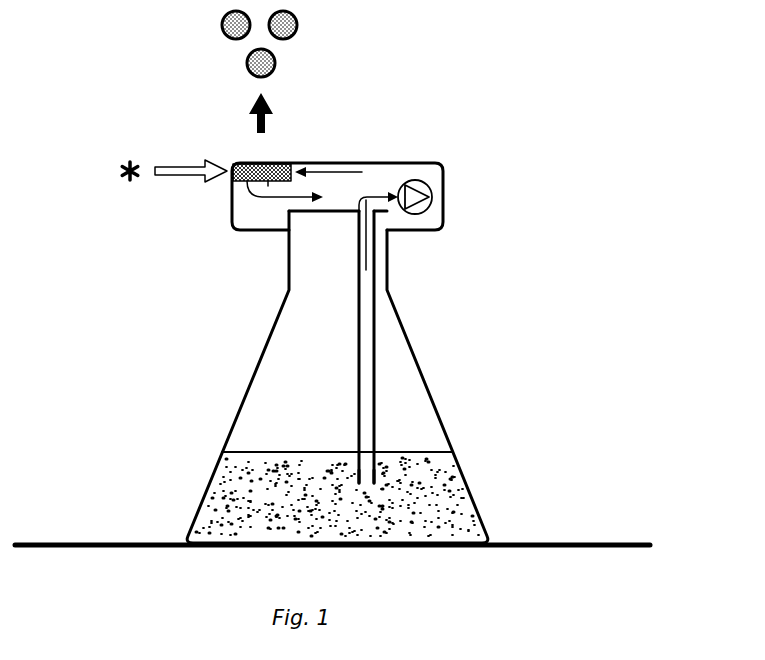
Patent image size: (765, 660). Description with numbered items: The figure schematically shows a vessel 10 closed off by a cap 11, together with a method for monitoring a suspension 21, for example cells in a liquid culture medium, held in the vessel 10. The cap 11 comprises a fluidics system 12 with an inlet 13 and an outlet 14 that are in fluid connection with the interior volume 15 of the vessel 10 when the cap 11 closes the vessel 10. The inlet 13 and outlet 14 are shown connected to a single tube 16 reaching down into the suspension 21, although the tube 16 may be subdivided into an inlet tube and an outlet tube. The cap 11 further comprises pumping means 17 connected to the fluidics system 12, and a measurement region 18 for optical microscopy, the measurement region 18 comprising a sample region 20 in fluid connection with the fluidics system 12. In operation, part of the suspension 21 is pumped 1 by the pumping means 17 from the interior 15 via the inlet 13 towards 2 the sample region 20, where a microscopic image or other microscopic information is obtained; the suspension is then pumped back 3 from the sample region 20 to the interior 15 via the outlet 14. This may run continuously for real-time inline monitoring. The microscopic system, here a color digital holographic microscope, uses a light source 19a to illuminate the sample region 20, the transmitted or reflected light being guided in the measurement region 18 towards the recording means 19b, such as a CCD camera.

The pumping step 1 is at (365, 248).
The flow towards sample region 2 is at (329, 172).
The pumping back step 3 is at (272, 183).
The vessel 10 is at (216, 386).
The cap 11 is at (425, 161).
The fluidics system 12 is at (365, 190).
The inlet 13 is at (374, 462).
The outlet 14 is at (359, 462).
The interior volume 15 is at (329, 374).
The tube 16 is at (366, 367).
The pumping means 17 is at (443, 197).
The measurement region 18 is at (224, 142).
The light source 19a is at (132, 196).
The recording means 19b is at (312, 48).
The sample region 20 is at (240, 192).
The suspension 21 is at (443, 500).